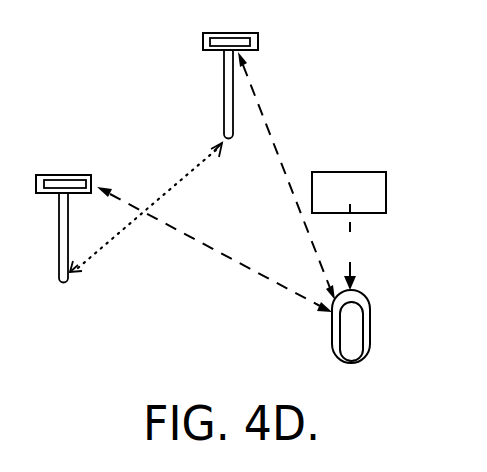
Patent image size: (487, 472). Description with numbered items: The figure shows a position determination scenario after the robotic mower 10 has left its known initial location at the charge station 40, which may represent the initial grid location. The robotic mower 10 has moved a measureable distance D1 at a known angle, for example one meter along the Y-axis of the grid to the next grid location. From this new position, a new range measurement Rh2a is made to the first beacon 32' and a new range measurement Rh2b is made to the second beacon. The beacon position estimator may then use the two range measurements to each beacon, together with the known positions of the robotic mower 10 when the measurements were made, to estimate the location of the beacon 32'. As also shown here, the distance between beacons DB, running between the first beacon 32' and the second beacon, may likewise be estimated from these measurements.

The first beacon 32' is at (89, 196).
The charge station 40 is at (352, 171).
The robotic mower 10 is at (363, 335).
The range measurement to the first beacon Rh2a is at (214, 249).
The range measurement to the second beacon Rh2b is at (286, 176).
The distance between beacons DB is at (146, 207).
The measureable distance D1 is at (352, 247).